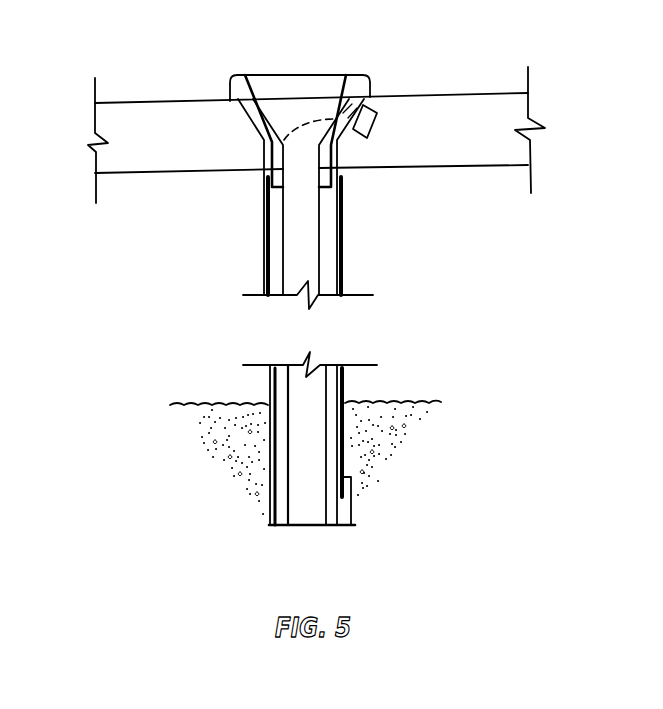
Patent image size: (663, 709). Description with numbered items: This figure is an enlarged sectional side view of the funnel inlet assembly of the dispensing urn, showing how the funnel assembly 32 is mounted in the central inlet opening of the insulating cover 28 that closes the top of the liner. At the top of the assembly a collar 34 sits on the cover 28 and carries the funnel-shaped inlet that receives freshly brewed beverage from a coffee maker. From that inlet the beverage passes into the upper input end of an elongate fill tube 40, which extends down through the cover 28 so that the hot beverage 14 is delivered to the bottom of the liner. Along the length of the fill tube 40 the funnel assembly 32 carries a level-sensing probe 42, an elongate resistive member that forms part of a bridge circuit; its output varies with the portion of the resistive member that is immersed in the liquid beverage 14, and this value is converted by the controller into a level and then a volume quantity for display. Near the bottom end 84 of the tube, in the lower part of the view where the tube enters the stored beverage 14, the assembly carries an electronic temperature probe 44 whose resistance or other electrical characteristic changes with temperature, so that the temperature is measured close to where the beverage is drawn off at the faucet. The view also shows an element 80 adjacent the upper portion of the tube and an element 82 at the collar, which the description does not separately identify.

The beverage 14 is at (427, 400).
The cover 28 is at (168, 103).
The funnel assembly 32 is at (345, 260).
The collar 34 is at (370, 84).
The fill tube 40 is at (330, 230).
The level-sensing probe 42 is at (264, 289).
The temperature probe 44 is at (353, 514).
The sensor 80 is at (378, 118).
The conduit 82 is at (346, 75).
The bottom end 84 is at (310, 526).